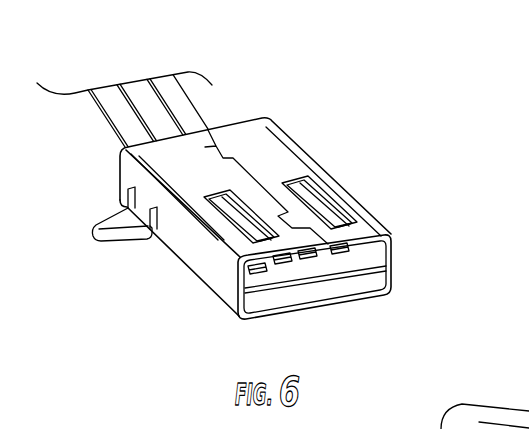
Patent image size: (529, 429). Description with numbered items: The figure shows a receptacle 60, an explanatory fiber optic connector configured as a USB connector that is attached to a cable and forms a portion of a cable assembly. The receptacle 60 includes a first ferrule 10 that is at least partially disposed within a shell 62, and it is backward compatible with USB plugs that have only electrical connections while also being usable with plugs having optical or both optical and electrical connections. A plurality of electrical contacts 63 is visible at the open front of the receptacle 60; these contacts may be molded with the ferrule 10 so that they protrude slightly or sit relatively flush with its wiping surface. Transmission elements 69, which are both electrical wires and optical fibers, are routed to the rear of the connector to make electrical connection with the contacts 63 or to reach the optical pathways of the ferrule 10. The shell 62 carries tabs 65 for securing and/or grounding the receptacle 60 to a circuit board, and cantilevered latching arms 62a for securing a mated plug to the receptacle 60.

The first ferrule 10 is at (362, 292).
The receptacle 60 is at (372, 209).
The shell 62 is at (197, 257).
The latching arms 62a is at (243, 212).
The electrical contacts 63 is at (342, 254).
The tabs 65 is at (90, 238).
The transmission elements 69 is at (88, 90).